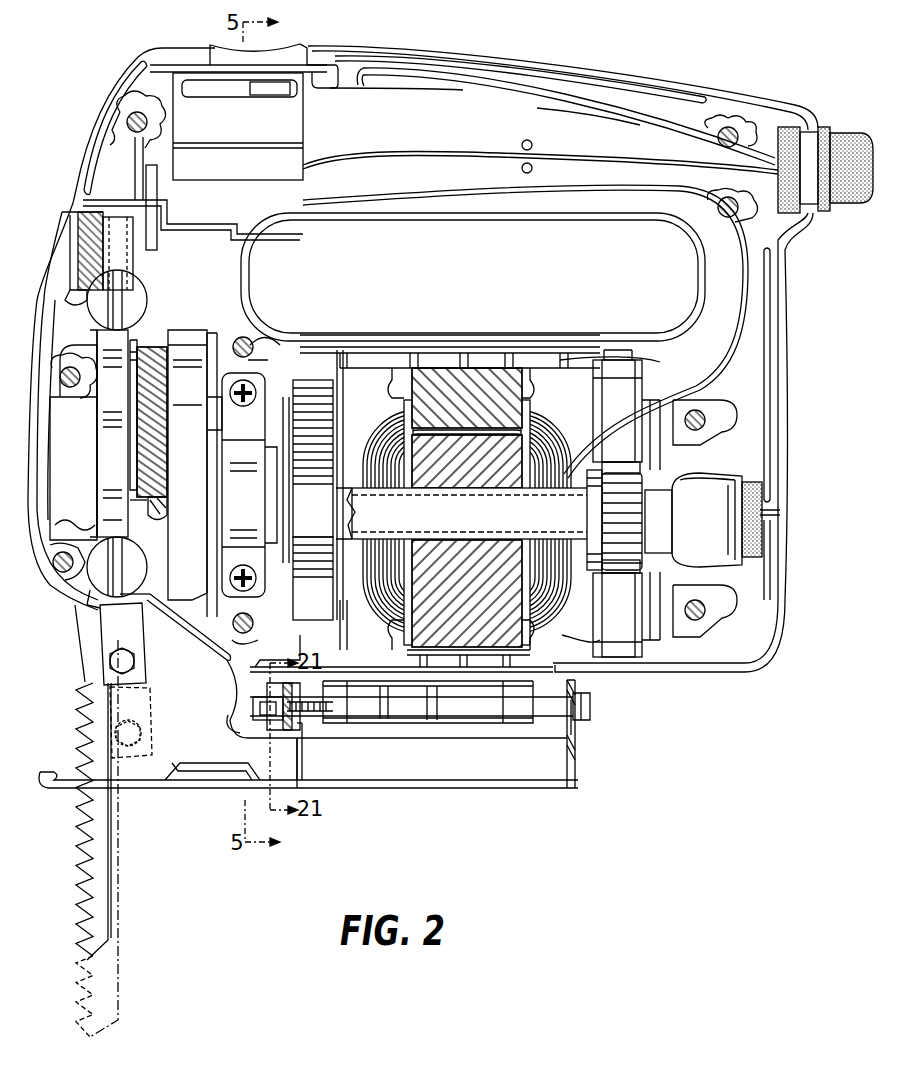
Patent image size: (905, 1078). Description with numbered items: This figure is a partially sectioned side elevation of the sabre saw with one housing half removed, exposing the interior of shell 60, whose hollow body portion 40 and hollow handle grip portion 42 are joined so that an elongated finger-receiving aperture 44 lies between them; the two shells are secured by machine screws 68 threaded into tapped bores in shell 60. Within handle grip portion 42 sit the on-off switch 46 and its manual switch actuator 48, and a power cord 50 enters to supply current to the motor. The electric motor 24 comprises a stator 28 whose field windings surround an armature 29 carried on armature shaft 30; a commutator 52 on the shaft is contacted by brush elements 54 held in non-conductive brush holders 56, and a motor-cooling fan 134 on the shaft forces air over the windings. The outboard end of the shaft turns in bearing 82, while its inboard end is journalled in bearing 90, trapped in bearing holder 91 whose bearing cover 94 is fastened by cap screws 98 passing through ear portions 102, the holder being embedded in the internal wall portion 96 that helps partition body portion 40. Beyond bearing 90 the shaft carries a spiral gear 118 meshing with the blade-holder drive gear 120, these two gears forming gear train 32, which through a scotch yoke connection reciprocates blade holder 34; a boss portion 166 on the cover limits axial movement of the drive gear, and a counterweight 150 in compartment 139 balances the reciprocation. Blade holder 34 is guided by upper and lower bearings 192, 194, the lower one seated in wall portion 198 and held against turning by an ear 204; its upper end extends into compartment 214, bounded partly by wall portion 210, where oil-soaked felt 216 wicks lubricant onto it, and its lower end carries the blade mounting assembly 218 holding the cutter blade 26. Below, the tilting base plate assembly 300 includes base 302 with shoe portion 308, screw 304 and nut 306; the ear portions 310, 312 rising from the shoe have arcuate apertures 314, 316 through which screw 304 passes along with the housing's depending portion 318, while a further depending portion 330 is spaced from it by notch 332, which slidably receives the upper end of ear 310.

The electric motor 24 is at (495, 365).
The cutter blade 26 is at (115, 848).
The stator 28 is at (437, 368).
The armature 29 is at (425, 445).
The armature shaft 30 is at (352, 510).
The gear train 32 is at (143, 503).
The blade holder 34 is at (97, 447).
The body portion 40 is at (672, 674).
The handle grip portion 42 is at (540, 62).
The finger-receiving aperture 44 is at (578, 290).
The on-off switch 46 is at (302, 125).
The switch actuator 48 is at (302, 45).
The power cord 50 is at (845, 133).
The commutator 52 is at (642, 490).
The brush elements 54 is at (621, 466).
The brush holders 56 is at (607, 392).
The shell 60 is at (785, 320).
The machine screws 68 is at (128, 118).
The bearing 82 is at (722, 476).
The bearing 90 is at (270, 447).
The bearing holder 91 is at (262, 365).
The bearing cover 94 is at (234, 514).
The internal wall portion 96 is at (299, 651).
The cap screws 98 is at (246, 406).
The ear portions 102 is at (208, 372).
The spiral gear 118 is at (164, 503).
The blade-holder drive gear 120 is at (150, 468).
The motor-cooling fan 134 is at (325, 612).
The compartment 139 is at (58, 466).
The counterweight 150 is at (194, 414).
The boss portion 166 is at (210, 394).
The bearing 192 is at (70, 298).
The bearing 194 is at (88, 590).
The wall portion 198 is at (86, 523).
The ear 204 is at (115, 293).
The wall portion 210 is at (210, 222).
The compartment 214 is at (150, 226).
The oil-soaked felt 216 is at (78, 238).
The blade mounting assembly 218 is at (150, 668).
The tilting base plate assembly 300 is at (514, 795).
The base 302 is at (354, 776).
The screw 304 is at (497, 718).
The nut 306 is at (253, 705).
The shoe portion 308 is at (416, 790).
The ear portion 310 is at (299, 766).
The ear portion 312 is at (578, 765).
The arcuate aperture 314 is at (299, 726).
The arcuate aperture 316 is at (562, 722).
The depending portion 318 is at (445, 740).
The depending portion 330 is at (228, 727).
The notch 332 is at (283, 690).